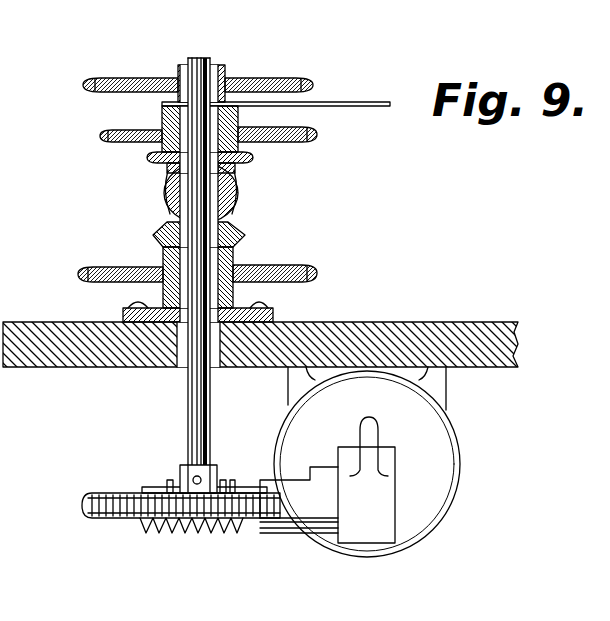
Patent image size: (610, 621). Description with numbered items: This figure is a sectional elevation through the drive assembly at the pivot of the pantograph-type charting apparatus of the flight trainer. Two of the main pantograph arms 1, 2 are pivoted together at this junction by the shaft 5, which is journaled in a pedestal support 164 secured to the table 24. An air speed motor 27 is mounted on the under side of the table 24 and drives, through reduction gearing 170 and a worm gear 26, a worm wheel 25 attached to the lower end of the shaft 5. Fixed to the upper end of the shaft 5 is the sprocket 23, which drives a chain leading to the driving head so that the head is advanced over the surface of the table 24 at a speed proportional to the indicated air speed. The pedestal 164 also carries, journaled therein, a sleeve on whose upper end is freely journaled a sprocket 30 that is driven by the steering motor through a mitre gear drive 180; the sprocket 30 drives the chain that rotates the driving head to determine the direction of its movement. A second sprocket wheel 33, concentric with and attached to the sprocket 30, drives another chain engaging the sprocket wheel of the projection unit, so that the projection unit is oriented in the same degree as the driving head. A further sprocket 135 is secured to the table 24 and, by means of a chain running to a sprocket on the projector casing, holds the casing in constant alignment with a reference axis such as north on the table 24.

The pantograph arm 1 is at (162, 110).
The pantograph arm 2 is at (340, 102).
The shaft 5 is at (200, 58).
The sprocket 23 is at (105, 80).
The table 24 is at (378, 322).
The worm wheel 25 is at (82, 503).
The worm gear 26 is at (165, 482).
The air speed motor 27 is at (459, 460).
The sprocket 30 is at (147, 157).
The second sprocket wheel 33 is at (300, 141).
The sprocket 135 is at (80, 272).
The pedestal support 164 is at (125, 313).
The reduction gearing 170 is at (367, 540).
The mitre gear drive 180 is at (160, 233).